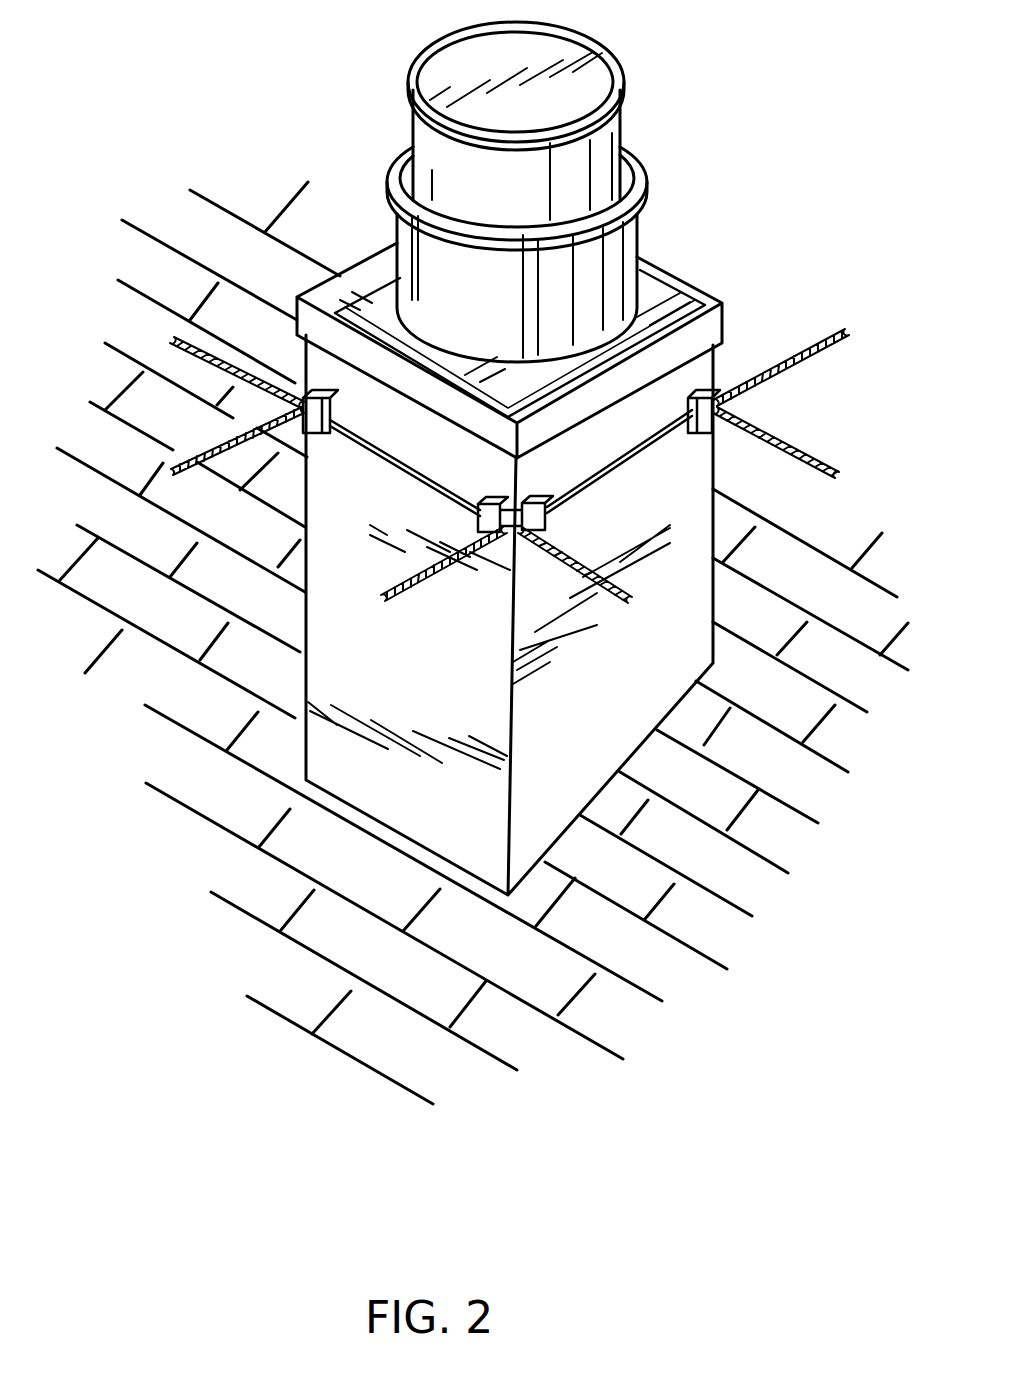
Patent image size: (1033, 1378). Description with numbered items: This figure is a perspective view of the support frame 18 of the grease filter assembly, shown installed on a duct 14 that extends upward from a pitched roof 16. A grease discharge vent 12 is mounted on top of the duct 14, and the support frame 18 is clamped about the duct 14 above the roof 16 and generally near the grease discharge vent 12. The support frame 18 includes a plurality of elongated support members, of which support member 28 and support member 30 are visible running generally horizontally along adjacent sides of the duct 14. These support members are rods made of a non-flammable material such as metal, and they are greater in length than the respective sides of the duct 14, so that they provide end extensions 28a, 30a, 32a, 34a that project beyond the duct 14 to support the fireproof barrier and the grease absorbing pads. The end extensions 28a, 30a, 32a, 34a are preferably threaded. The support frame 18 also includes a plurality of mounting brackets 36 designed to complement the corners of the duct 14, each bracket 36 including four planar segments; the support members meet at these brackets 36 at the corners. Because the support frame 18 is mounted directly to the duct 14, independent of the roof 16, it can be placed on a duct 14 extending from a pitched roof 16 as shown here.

The grease discharge vent 12 is at (513, 290).
The duct 14 is at (636, 689).
The roof 16 is at (780, 755).
The support frame 18 is at (793, 406).
The elongated support member 28 is at (633, 470).
The end extension 28a is at (810, 348).
The elongated support member 30 is at (405, 463).
The end extension 30a is at (207, 353).
The end extension 32a is at (210, 438).
The end extension 34a is at (833, 457).
The mounting bracket 36 is at (342, 390).